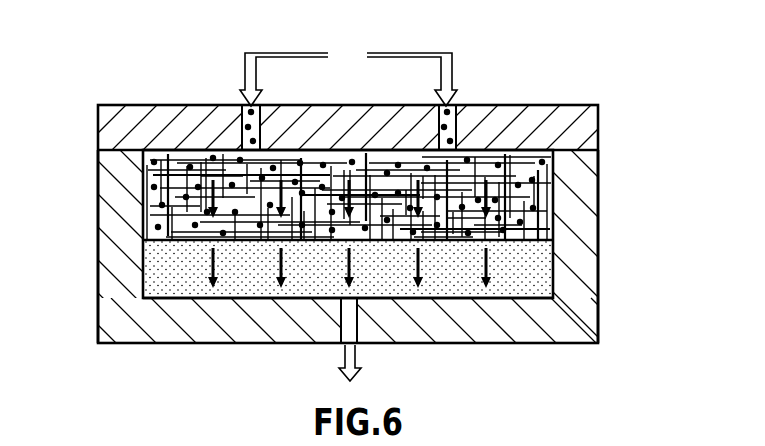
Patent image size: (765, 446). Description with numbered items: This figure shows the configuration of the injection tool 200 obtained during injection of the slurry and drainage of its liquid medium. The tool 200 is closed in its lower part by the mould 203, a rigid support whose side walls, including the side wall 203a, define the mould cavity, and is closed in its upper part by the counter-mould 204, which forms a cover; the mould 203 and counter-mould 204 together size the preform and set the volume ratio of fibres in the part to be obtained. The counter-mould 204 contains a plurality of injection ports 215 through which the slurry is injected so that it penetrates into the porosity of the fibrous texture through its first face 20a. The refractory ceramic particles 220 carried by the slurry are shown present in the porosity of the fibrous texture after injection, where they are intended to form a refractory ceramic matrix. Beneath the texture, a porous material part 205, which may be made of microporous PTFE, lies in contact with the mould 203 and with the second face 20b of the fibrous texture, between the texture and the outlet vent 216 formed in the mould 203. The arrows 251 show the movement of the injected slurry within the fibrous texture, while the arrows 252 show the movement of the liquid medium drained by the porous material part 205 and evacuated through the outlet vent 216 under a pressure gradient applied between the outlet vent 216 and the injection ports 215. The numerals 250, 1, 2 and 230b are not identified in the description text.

The injection tool 200 is at (122, 95).
The counter-mould 204 is at (180, 128).
The injection ports 215 is at (247, 103).
The gas inflow 250 is at (348, 76).
The sensor element 1 is at (320, 220).
The first face 20a is at (505, 150).
The refractory ceramic particles 220 is at (142, 187).
The particles 2 is at (537, 193).
The arrows 251 is at (143, 203).
The second face 20b is at (267, 243).
The arrows 252 is at (208, 256).
The mould 203 is at (233, 312).
The side wall 203a is at (130, 273).
The right housing wall 230b is at (572, 272).
The outlet vent 216 is at (348, 322).
The porous material part 205 is at (458, 292).